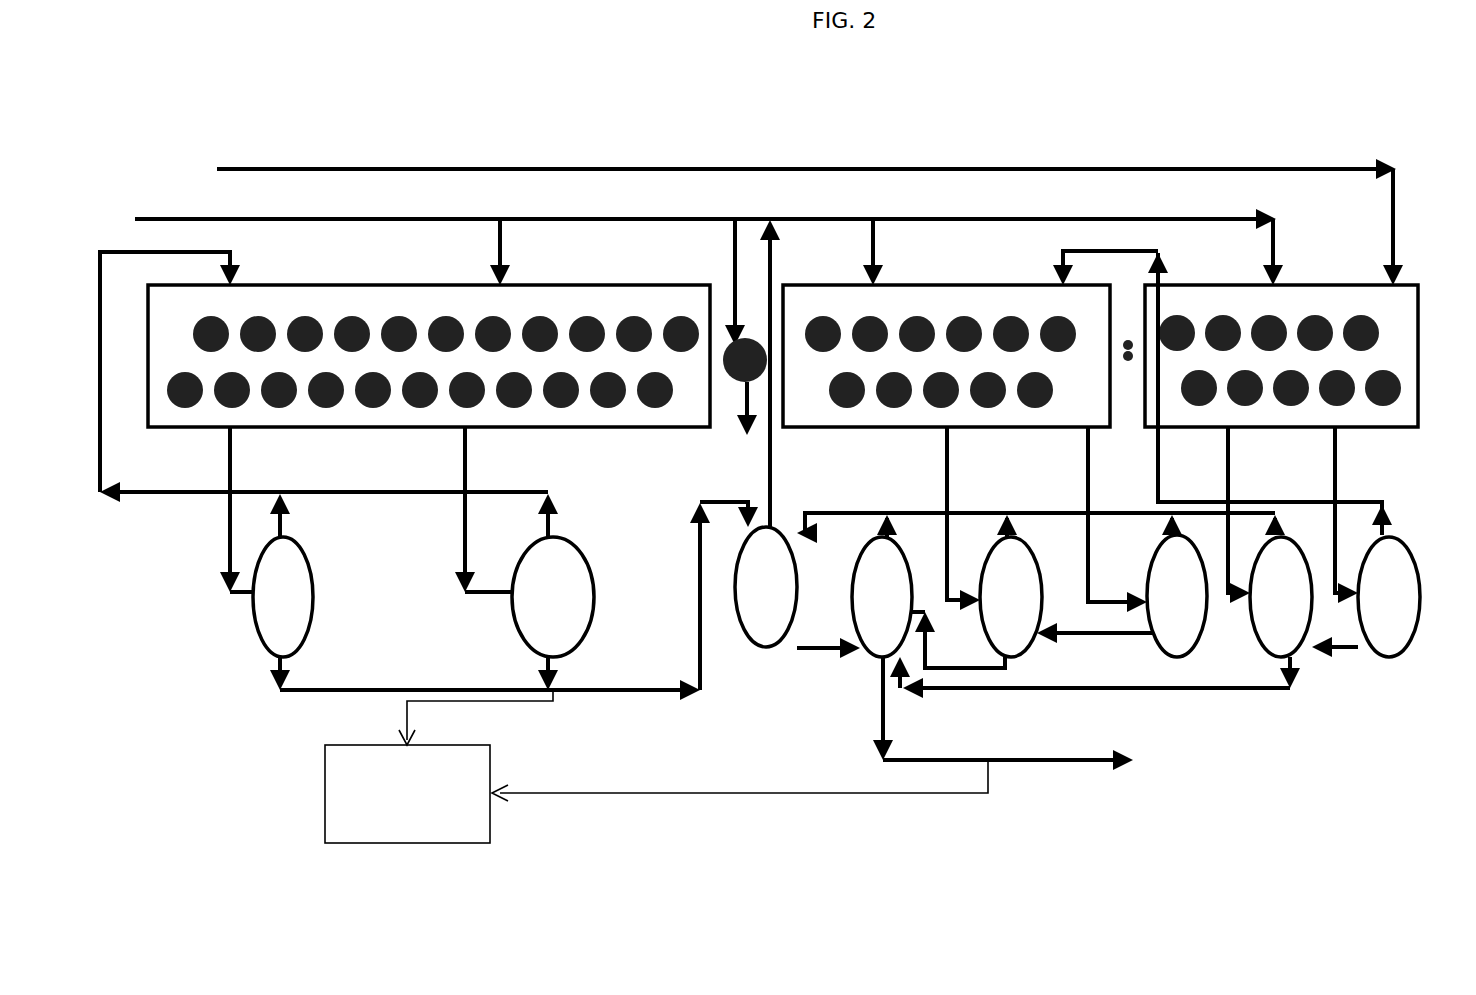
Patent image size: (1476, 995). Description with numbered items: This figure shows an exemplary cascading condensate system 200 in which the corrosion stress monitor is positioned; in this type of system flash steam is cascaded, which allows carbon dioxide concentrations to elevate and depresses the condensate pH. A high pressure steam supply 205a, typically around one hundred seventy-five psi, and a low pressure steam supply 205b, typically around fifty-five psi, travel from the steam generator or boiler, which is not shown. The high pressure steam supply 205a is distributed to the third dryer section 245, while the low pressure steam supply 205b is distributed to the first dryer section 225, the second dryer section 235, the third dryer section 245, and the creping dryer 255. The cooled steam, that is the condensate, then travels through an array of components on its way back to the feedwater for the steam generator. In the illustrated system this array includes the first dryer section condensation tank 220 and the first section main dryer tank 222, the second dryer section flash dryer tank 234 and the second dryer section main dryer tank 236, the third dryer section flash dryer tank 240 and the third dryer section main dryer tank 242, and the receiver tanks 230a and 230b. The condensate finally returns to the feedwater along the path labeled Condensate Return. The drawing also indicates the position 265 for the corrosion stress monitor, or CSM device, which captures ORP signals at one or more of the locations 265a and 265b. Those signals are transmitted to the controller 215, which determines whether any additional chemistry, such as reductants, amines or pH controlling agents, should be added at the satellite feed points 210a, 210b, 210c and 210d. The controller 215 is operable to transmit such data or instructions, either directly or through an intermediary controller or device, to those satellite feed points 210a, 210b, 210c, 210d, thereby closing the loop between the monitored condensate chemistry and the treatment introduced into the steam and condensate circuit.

The cascading condensate system 200 is at (1332, 98).
The high pressure steam supply 205a is at (297, 168).
The low pressure steam supply 205b is at (140, 219).
The satellite feed point 210a is at (1062, 169).
The satellite feed point 210b is at (569, 169).
The satellite feed point 210c is at (300, 219).
The satellite feed point 210d is at (655, 219).
The controller 215 is at (325, 803).
The first dryer section condensation tank 220 is at (313, 612).
The first section main dryer tank 222 is at (585, 565).
The first dryer section 225 is at (430, 427).
The receiver tank 230a is at (757, 650).
The receiver tank 230b is at (873, 660).
The second dryer section flash dryer tank 234 is at (1028, 650).
The second dryer section 235 is at (900, 427).
The second dryer section main dryer tank 236 is at (1168, 655).
The third dryer section flash dryer tank 240 is at (1293, 657).
The third dryer section main dryer tank 242 is at (1403, 657).
The third dryer section 245 is at (1388, 430).
The creping dryer 255 is at (738, 385).
The sensor 265 is at (1128, 362).
The location 265a is at (993, 797).
The location 265b is at (590, 632).